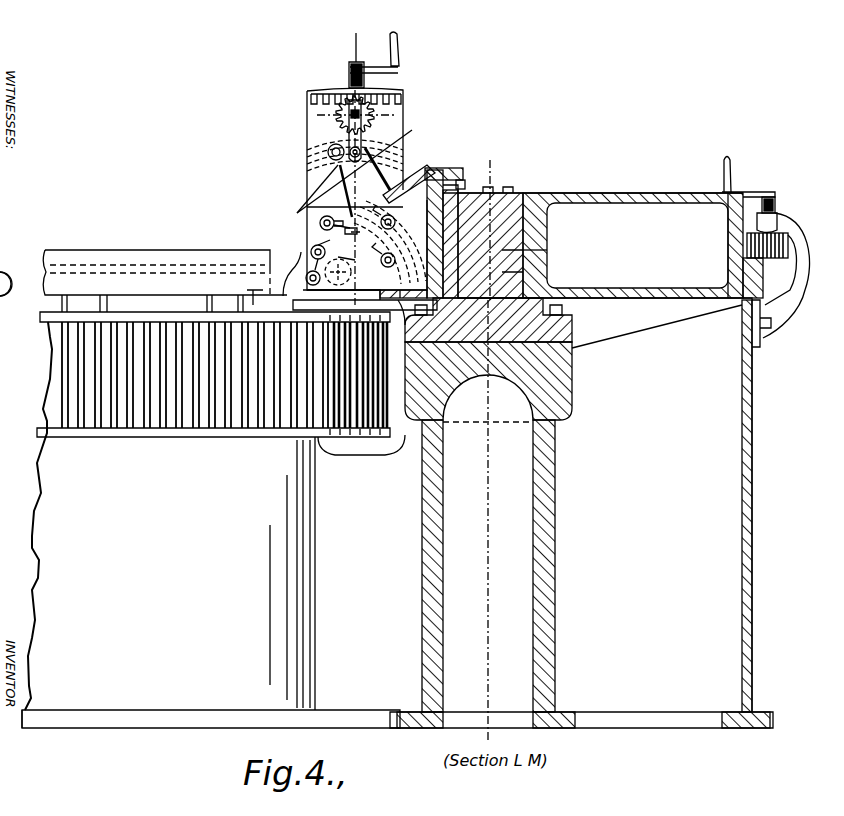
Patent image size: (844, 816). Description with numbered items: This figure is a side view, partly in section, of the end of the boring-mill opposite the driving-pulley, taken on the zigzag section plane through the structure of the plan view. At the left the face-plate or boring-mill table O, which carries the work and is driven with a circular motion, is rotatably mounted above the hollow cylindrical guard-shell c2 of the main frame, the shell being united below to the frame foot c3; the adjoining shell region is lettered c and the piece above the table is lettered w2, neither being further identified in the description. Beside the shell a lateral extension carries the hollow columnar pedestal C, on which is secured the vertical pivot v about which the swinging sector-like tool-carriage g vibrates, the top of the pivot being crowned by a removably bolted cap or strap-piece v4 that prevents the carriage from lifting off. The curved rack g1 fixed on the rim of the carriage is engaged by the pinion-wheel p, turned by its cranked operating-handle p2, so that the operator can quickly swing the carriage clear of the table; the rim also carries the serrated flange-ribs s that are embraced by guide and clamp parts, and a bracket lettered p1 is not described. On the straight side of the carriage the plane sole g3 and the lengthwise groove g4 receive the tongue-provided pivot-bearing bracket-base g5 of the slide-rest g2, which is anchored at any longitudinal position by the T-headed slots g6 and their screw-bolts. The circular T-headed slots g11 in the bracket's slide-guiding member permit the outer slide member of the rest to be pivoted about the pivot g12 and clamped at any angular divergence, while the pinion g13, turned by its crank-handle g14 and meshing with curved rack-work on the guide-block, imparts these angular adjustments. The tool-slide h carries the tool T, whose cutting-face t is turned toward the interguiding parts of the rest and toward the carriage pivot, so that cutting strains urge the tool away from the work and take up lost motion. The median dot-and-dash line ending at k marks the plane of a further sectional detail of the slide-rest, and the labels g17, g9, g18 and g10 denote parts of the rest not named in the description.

The section line I K k is at (373, 60).
The ring gear g17 is at (312, 102).
The pinion g13 is at (336, 122).
The crank-handle g14 is at (369, 163).
The slide-rest g2 is at (290, 157).
The circular T-headed slots g11 is at (311, 245).
The pin g9 is at (349, 232).
The pivot-bearing bracket-base g5 is at (426, 222).
The pivot g12 is at (343, 277).
The T-headed slots g6 is at (433, 168).
The plane sole g3 is at (476, 192).
The bolts g18 is at (458, 186).
The cap or strap-piece v4 is at (537, 193).
The tool-carriage g is at (652, 185).
The lengthwise groove g4 is at (633, 245).
The vertical pivot v is at (523, 250).
The curved rack g1 is at (743, 250).
The cranked operating-handle p2 is at (742, 184).
The pinion-wheel p is at (787, 247).
The serrated flange-ribs s is at (758, 267).
The bracket p1 is at (803, 265).
The hollow columnar pedestal C is at (581, 519).
The cutting-face t is at (283, 295).
The slide member h is at (303, 293).
The tool T is at (254, 295).
The bolt g10 is at (395, 303).
The plate w2 is at (165, 278).
The cylinder c is at (213, 520).
The hollow cylindrical guard-shell c2 is at (43, 510).
The foot c3 is at (144, 717).
The face-plate or boring-mill table O is at (40, 313).